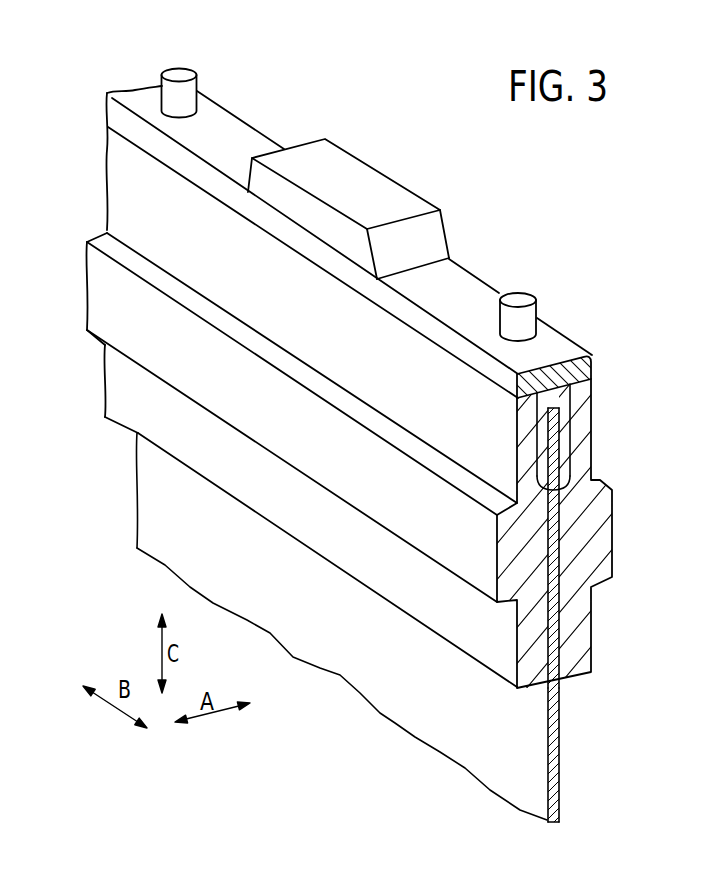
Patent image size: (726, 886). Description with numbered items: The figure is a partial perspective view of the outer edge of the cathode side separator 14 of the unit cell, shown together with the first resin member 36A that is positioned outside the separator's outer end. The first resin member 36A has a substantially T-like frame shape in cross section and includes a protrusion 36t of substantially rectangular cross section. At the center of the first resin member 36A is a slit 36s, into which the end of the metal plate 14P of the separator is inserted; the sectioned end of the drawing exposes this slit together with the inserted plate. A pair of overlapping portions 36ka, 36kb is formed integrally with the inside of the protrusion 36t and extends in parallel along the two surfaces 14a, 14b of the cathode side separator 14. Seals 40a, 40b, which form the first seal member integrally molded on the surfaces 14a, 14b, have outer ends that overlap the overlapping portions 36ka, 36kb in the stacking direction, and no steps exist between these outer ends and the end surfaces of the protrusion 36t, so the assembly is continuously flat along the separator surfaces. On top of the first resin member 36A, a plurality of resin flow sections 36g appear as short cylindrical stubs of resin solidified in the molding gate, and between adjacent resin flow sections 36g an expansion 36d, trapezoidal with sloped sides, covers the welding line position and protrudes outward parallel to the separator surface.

The cathode side separator 14 is at (620, 172).
The surface of the cathode side separator 14a is at (480, 760).
The surface of the cathode side separator 14b is at (561, 712).
The metal plate 14P is at (552, 642).
The resin flow sections 36g is at (183, 68).
The expansion 36d is at (380, 188).
The protrusion 36t is at (567, 352).
The first resin member 36A is at (600, 349).
The overlapping portion 36ka is at (528, 445).
The overlapping portion 36kb is at (573, 453).
The slit 36s is at (558, 432).
The seal 40a is at (516, 625).
The seal 40b is at (590, 648).